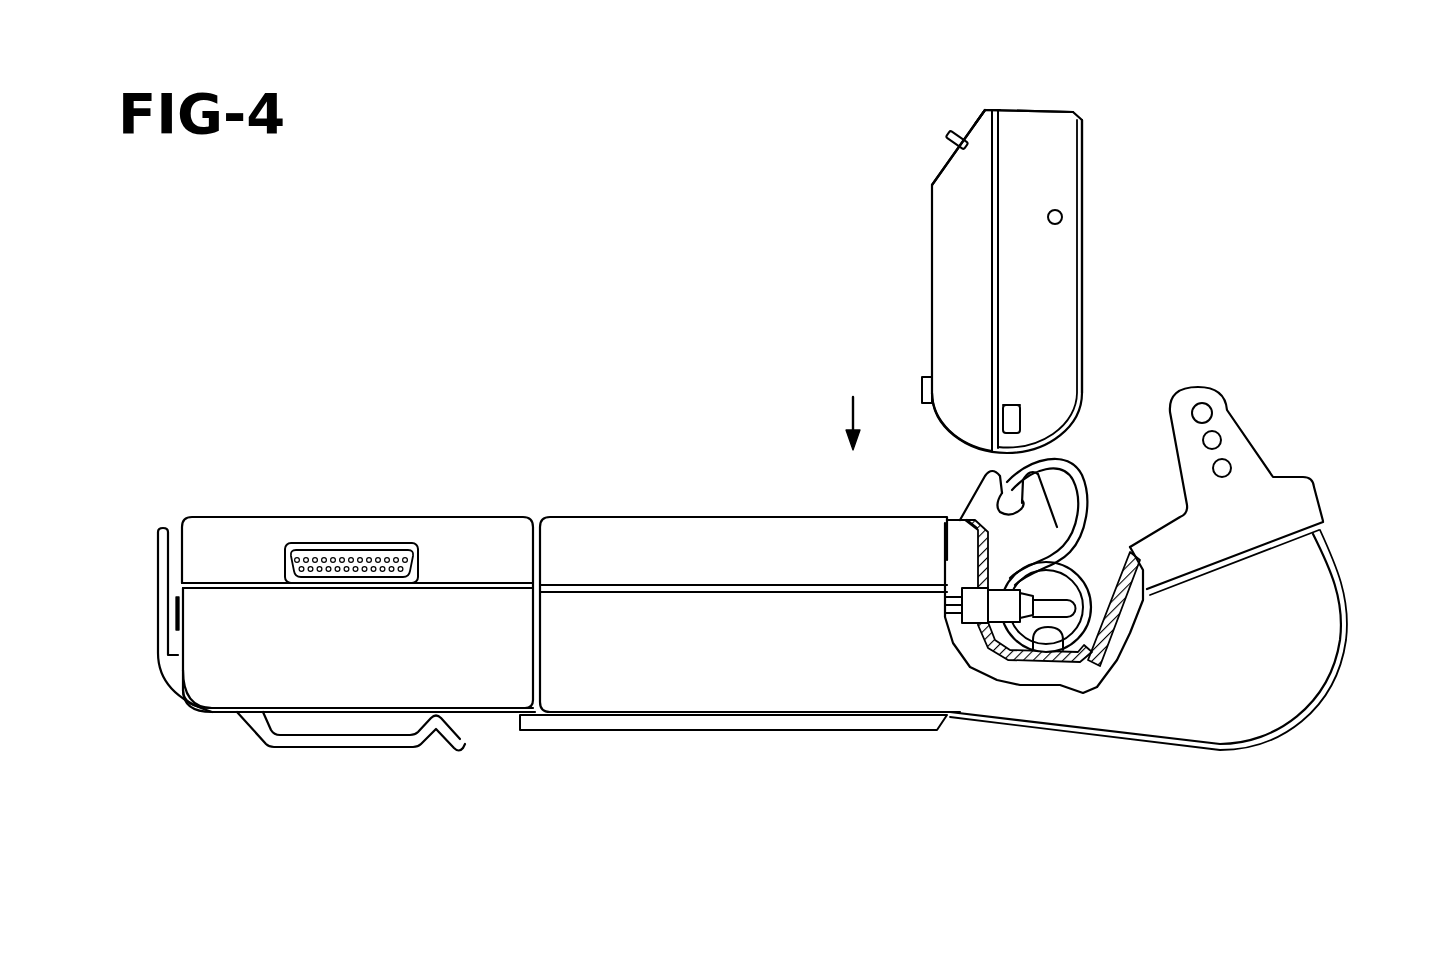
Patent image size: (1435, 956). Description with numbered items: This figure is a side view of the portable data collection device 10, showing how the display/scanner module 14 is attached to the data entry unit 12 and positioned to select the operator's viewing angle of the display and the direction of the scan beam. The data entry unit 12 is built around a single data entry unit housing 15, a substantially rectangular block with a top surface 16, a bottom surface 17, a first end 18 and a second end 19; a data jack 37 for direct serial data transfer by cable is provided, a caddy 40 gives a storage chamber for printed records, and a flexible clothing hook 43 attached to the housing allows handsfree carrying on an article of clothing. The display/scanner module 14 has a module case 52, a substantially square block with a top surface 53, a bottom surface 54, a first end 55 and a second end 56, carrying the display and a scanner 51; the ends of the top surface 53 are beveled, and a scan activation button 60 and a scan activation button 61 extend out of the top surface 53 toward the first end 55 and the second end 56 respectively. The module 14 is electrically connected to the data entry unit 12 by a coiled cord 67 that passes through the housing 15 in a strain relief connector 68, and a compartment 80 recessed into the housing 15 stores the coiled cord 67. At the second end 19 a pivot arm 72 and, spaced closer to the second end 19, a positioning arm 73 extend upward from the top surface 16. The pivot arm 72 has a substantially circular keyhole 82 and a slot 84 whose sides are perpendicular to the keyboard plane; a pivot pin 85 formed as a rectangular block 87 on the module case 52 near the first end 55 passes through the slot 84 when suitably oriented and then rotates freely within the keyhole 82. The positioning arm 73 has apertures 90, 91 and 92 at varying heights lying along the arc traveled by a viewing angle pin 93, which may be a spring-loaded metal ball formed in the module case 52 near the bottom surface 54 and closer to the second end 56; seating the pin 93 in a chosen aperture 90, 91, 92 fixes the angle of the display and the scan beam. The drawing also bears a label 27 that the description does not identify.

The portable device 10 is at (542, 398).
The data entry unit 12 is at (673, 503).
The display/scanner module 14 is at (916, 236).
The data entry unit housing 15 is at (800, 676).
The top surface 16 is at (490, 530).
The bottom surface 17 is at (482, 716).
The first end 18 is at (189, 700).
The second end 19 is at (1323, 570).
The side bracket 27 is at (163, 562).
The data jack 37 is at (333, 562).
The caddy 40 is at (668, 732).
The clothing hook 43 is at (357, 742).
The scanner 51 is at (1020, 110).
The module case 52 is at (1045, 273).
The top surface 53 is at (934, 181).
The bottom surface 54 is at (1083, 140).
The first end 55 is at (962, 438).
The second end 56 is at (985, 110).
The scan activation button 60 is at (922, 390).
The scan activation button 61 is at (953, 136).
The coiled cord 67 is at (1048, 632).
The strain relief connector 68 is at (1003, 607).
The pivot arm 72 is at (990, 494).
The positioning arm 73 is at (1187, 382).
The compartment 80 is at (1077, 662).
The keyhole 82 is at (1008, 500).
The slot 84 is at (1005, 476).
The pivot pin 85 is at (1015, 426).
The rectangular block 87 is at (1012, 403).
The aperture 90 is at (1203, 412).
The aperture 91 is at (1213, 438).
The aperture 92 is at (1224, 466).
The viewing angle pin 93 is at (1062, 215).